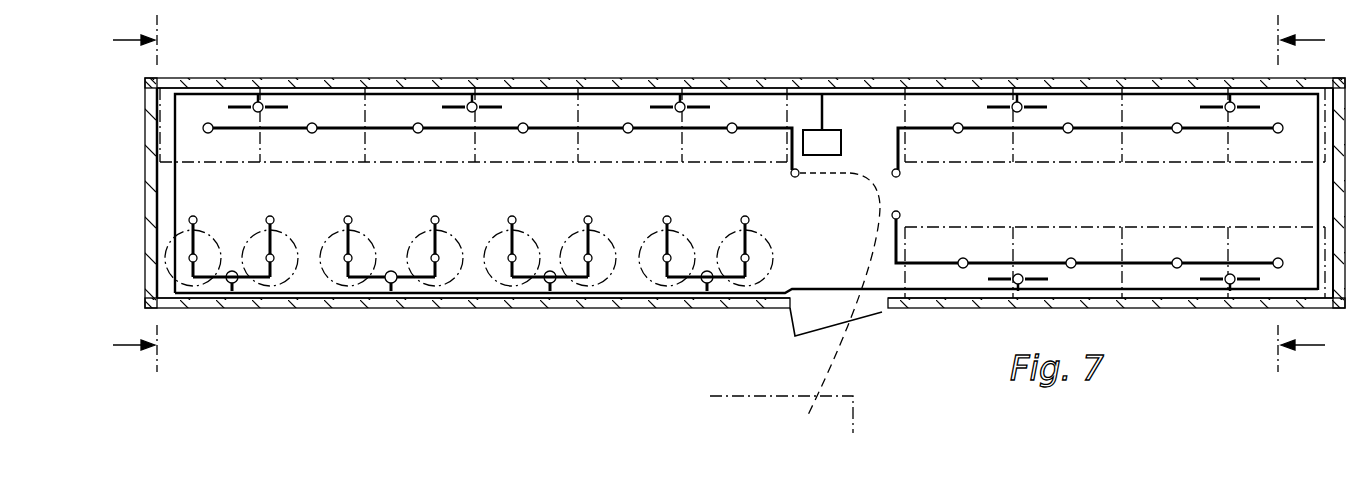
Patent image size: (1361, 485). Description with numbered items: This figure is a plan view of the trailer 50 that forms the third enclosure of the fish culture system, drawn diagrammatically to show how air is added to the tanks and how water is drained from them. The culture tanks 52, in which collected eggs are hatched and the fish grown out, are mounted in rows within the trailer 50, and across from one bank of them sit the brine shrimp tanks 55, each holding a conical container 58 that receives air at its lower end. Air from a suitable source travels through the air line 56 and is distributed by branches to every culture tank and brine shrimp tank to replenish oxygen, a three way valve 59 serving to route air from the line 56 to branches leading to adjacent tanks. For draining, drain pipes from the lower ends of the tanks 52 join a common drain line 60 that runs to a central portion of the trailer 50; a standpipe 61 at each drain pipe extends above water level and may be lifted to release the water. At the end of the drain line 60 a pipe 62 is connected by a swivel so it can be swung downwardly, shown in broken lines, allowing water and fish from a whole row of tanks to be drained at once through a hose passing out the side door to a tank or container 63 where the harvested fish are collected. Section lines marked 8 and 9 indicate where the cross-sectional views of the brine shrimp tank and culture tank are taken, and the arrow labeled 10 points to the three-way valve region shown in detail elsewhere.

The third enclosure trailer 50 is at (861, 77).
The air line 56 is at (335, 93).
The culture tanks 52 is at (614, 164).
The standpipe 61 is at (523, 133).
The three way valve 59 is at (678, 100).
The conical container 58 is at (327, 240).
The brine shrimp tanks 55 is at (590, 228).
The sprinkler unit 10 is at (391, 271).
The swivel drain pipe 62 is at (790, 176).
The common drain line 60 is at (896, 248).
The tank or container 63 is at (783, 392).
The section line 8- 8 is at (118, 193).
The section line 9- 9 is at (1312, 193).